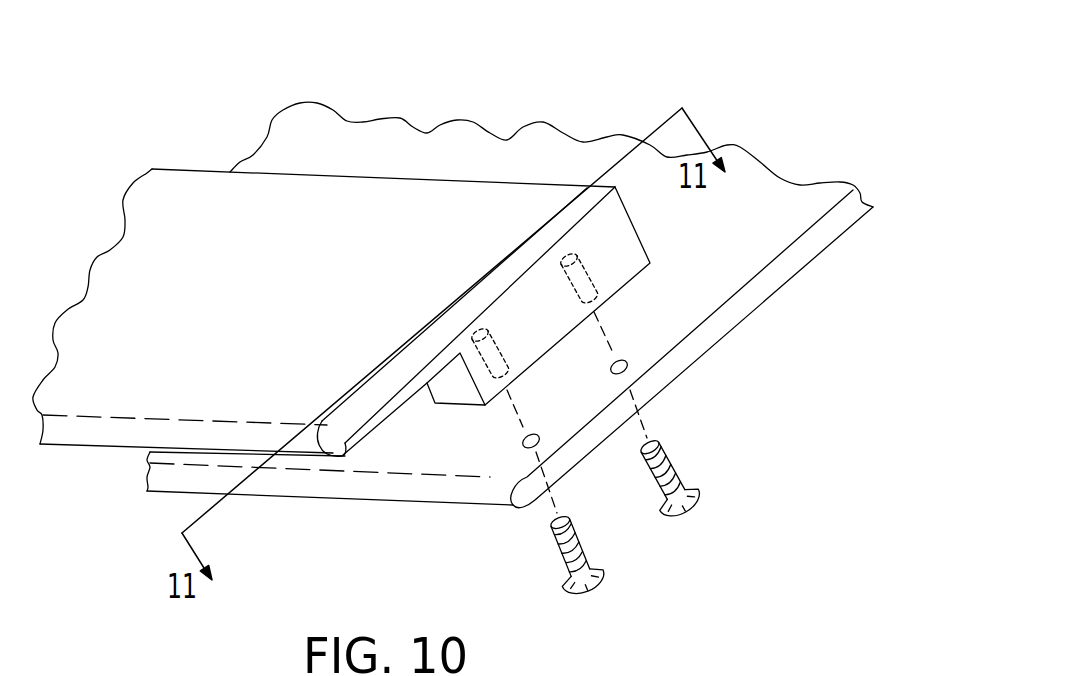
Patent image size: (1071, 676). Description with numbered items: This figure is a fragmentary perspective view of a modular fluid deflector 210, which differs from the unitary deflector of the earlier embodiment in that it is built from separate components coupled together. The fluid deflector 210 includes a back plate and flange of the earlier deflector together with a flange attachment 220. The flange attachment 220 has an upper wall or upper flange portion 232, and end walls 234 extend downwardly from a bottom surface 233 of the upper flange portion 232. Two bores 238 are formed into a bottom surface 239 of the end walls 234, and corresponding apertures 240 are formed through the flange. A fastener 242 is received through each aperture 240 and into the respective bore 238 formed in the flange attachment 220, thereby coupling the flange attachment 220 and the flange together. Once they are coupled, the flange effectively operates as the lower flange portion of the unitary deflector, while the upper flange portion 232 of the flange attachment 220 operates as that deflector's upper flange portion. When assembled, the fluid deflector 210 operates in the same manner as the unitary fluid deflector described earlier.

The fluid deflector 210 is at (598, 74).
The flange attachment 220 is at (320, 203).
The upper flange portion 232 is at (135, 390).
The bottom surface 233 is at (362, 442).
The end walls 234 is at (627, 243).
The bores 238 is at (505, 330).
The bottom surface 239 is at (455, 408).
The apertures 240 is at (517, 437).
The fastener 242 is at (680, 465).